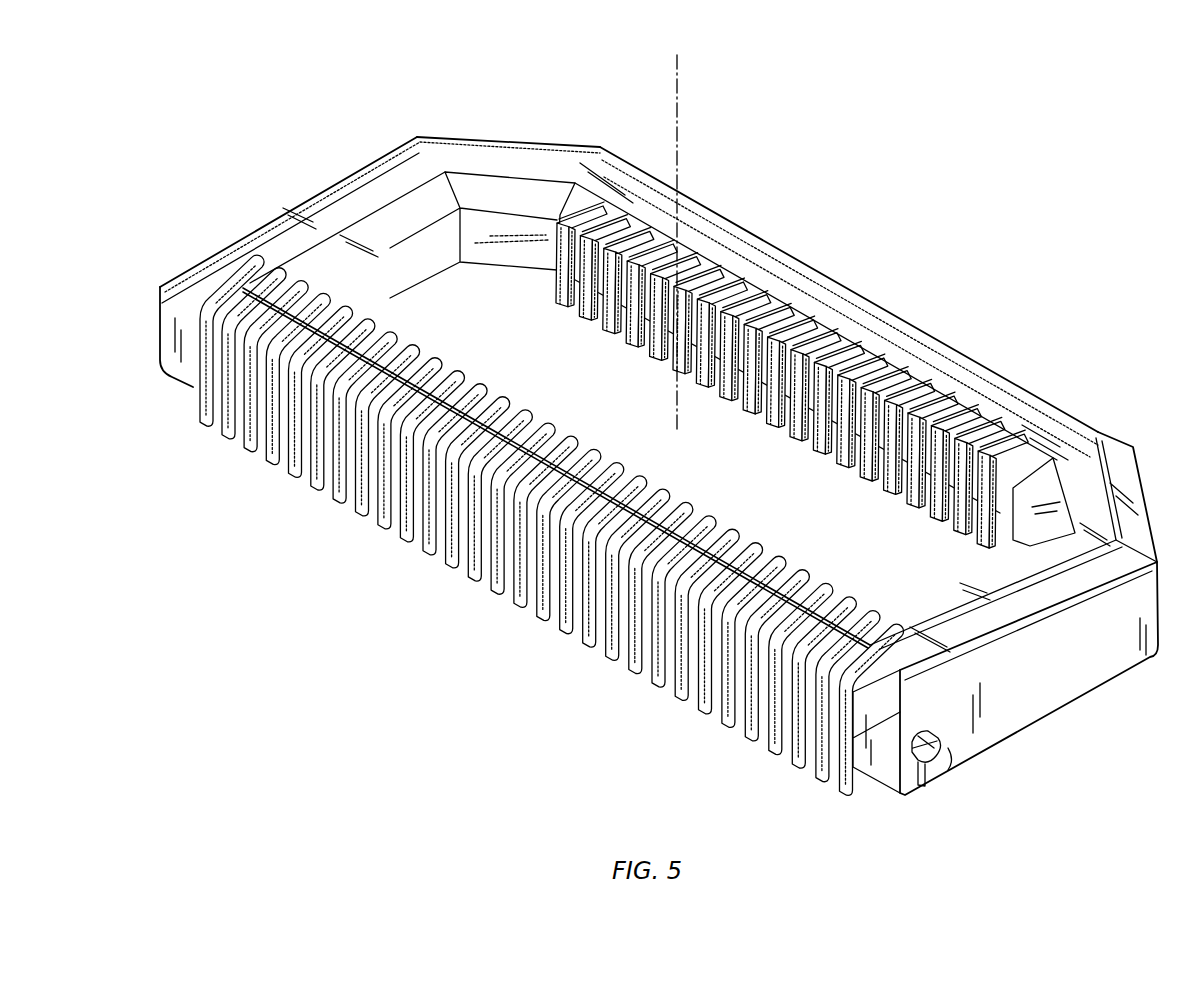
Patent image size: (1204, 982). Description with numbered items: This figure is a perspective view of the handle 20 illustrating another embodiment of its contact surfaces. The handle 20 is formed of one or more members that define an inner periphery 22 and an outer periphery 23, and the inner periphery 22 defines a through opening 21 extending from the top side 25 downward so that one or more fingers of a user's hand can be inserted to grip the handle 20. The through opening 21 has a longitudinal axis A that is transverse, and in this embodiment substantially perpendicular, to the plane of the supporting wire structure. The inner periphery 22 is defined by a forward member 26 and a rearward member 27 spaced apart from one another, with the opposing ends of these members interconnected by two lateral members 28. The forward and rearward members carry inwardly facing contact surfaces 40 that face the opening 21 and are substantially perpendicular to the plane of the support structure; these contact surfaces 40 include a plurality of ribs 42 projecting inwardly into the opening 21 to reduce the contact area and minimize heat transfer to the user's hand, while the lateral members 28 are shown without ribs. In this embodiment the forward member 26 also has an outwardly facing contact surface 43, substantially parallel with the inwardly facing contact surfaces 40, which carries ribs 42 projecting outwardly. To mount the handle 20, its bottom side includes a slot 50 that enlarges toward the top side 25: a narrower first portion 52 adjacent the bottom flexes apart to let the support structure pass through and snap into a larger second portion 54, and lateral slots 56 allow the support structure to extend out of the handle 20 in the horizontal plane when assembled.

The handle 20 is at (345, 117).
The opening 21 is at (647, 410).
The inner periphery 22 is at (790, 535).
The outer periphery 23 is at (1132, 435).
The top side 25 is at (520, 160).
The forward member 26 is at (863, 740).
The rearward member 27 is at (1030, 422).
The lateral members 28 is at (290, 248).
The contact surfaces 40 is at (614, 498).
The ribs 42 is at (678, 690).
The outwardly facing contact surface 43 is at (435, 585).
The slot 50 is at (937, 789).
The first portion 52 is at (922, 788).
The second portion 54 is at (938, 738).
The lateral slots 56 is at (960, 760).
The longitudinal axis A is at (680, 118).